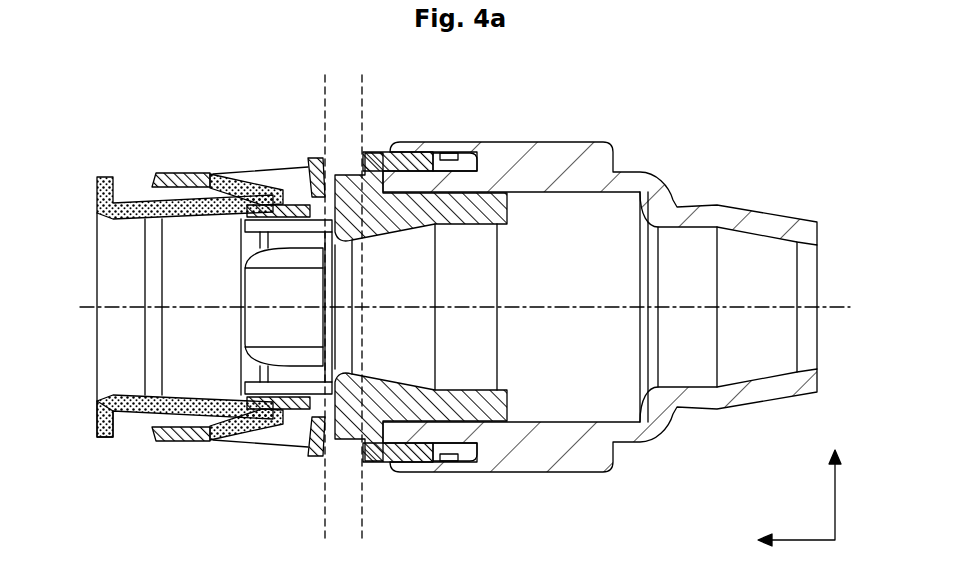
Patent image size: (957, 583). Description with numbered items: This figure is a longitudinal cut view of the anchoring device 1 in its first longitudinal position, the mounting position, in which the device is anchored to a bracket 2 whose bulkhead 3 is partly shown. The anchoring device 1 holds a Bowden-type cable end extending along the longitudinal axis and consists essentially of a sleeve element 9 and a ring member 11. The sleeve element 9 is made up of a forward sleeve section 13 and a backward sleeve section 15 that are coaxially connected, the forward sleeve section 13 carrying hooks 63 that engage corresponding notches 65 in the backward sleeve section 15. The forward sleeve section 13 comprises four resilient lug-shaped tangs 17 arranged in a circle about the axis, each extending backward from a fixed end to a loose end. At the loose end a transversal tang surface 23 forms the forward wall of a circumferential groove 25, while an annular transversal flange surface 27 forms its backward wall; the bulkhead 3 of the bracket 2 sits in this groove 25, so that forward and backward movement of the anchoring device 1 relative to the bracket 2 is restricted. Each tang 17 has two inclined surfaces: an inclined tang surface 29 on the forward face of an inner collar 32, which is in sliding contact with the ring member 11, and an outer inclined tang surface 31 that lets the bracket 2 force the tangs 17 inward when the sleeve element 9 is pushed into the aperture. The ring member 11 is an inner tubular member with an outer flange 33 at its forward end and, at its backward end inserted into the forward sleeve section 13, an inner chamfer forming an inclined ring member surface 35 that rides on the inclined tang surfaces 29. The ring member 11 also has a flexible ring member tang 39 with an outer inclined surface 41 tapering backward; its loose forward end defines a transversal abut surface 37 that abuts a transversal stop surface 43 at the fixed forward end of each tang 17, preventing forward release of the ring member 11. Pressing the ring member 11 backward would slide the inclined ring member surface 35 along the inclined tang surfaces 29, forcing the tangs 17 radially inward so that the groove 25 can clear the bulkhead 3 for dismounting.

The anchoring device 1 is at (712, 112).
The bracket 2 is at (362, 497).
The bulkhead 3 is at (354, 507).
The sleeve element 9 is at (552, 485).
The ring member 11 is at (143, 200).
The forward sleeve section 13 is at (418, 142).
The backward sleeve section 15 is at (547, 157).
The resilient tangs 17 is at (258, 176).
The transversal tang surface 23 is at (331, 170).
The circumferential groove 25 is at (343, 168).
The annular transversal flange surface 27 is at (353, 157).
The inclined tang surface 29 is at (262, 178).
The inclined tang surface 31 is at (297, 186).
The inner collar 32 is at (291, 427).
The outer flange 33 is at (133, 430).
The inclined ring member surface 35 is at (254, 222).
The transversal abut surface 37 is at (160, 437).
The ring member tang 39 is at (282, 437).
The outer inclined surface 41 is at (260, 440).
The transversal stop surface 43 is at (220, 440).
The hooks 63 is at (445, 462).
The notches 65 is at (468, 458).